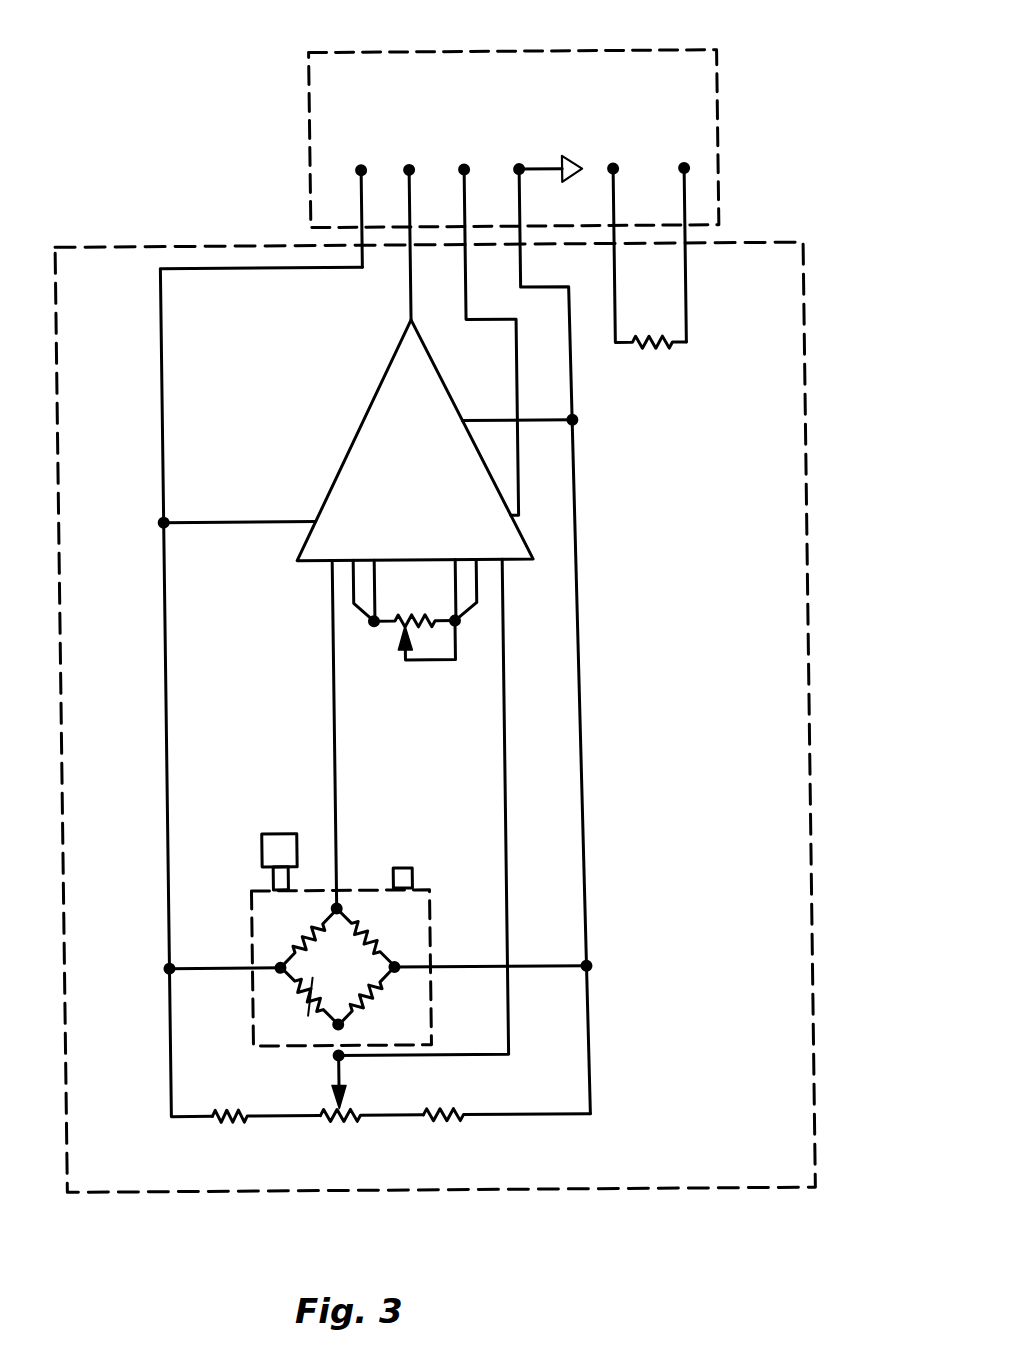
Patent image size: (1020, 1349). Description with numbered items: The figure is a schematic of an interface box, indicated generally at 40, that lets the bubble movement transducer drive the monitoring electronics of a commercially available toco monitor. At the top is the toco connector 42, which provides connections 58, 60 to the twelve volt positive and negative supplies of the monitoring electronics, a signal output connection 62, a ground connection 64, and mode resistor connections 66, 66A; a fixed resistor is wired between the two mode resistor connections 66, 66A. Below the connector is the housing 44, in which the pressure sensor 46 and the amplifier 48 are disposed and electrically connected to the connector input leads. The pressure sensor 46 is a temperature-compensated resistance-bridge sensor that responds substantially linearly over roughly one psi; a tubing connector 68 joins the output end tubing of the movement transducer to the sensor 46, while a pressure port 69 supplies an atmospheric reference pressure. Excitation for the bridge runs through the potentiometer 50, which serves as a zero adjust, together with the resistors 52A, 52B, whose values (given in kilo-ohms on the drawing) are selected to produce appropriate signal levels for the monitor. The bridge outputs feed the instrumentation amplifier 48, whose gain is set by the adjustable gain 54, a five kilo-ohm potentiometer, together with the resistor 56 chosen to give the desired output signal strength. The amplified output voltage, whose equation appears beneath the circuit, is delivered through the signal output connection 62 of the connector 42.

The signal conditioning circuit 40 is at (769, 203).
The toco connector 42 is at (599, 52).
The housing 44 is at (810, 381).
The pressure sensor 46 is at (367, 890).
The amplifier 48 is at (356, 437).
The potentiometer 50 is at (350, 1105).
The resistor 52A is at (235, 1105).
The resistor 52B is at (440, 1118).
The adjustable gain 54 is at (389, 632).
The resistor 56 is at (432, 621).
The connection 58 is at (368, 170).
The connection 60 is at (471, 170).
The signal output connection 62 is at (416, 170).
The ground connection 64 is at (526, 170).
The mode resistor connection 66 is at (620, 170).
The mode resistor connection 66A is at (691, 170).
The tubing connector 68 is at (260, 850).
The pressure port 69 is at (410, 878).